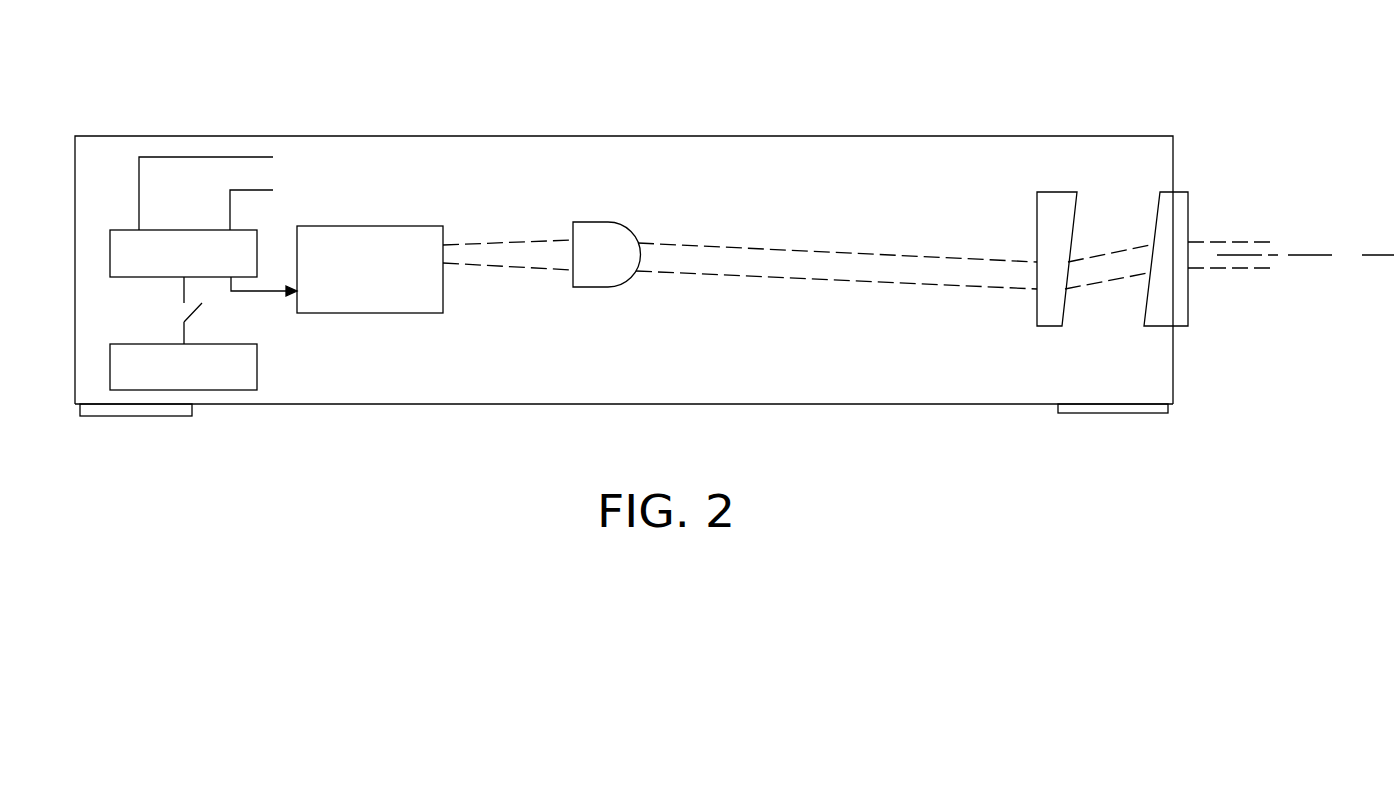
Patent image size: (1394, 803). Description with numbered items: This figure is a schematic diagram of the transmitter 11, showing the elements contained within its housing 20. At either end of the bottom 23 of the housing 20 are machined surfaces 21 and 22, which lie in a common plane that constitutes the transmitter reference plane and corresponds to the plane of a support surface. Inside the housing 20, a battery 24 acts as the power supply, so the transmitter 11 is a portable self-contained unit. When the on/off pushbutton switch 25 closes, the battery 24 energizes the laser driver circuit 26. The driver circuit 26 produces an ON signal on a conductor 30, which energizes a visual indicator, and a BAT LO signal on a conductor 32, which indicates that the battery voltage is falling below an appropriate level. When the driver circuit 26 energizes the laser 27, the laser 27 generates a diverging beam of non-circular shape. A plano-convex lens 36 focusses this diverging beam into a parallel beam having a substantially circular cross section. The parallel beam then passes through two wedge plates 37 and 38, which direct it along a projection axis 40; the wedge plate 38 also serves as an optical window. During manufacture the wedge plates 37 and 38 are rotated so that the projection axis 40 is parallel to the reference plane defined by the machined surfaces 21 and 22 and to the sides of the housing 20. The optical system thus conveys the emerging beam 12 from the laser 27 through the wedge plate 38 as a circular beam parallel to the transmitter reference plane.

The transmitter 11 is at (819, 110).
The output laser beam 12 is at (1215, 242).
The housing 20 is at (417, 136).
The machined surface 21 is at (97, 416).
The machined surface 22 is at (1120, 413).
The housing base 23 is at (425, 404).
The battery 24 is at (225, 390).
The pushbutton switch 25 is at (193, 318).
The laser driver circuit 26 is at (128, 230).
The laser 27 is at (398, 226).
The conductor 30 is at (175, 157).
The conductor 32 is at (252, 189).
The plano-convex lens 36 is at (598, 222).
The wedge plate 37 is at (1060, 192).
The wedge plate 38 is at (1180, 192).
The projection axis 40 is at (1350, 255).